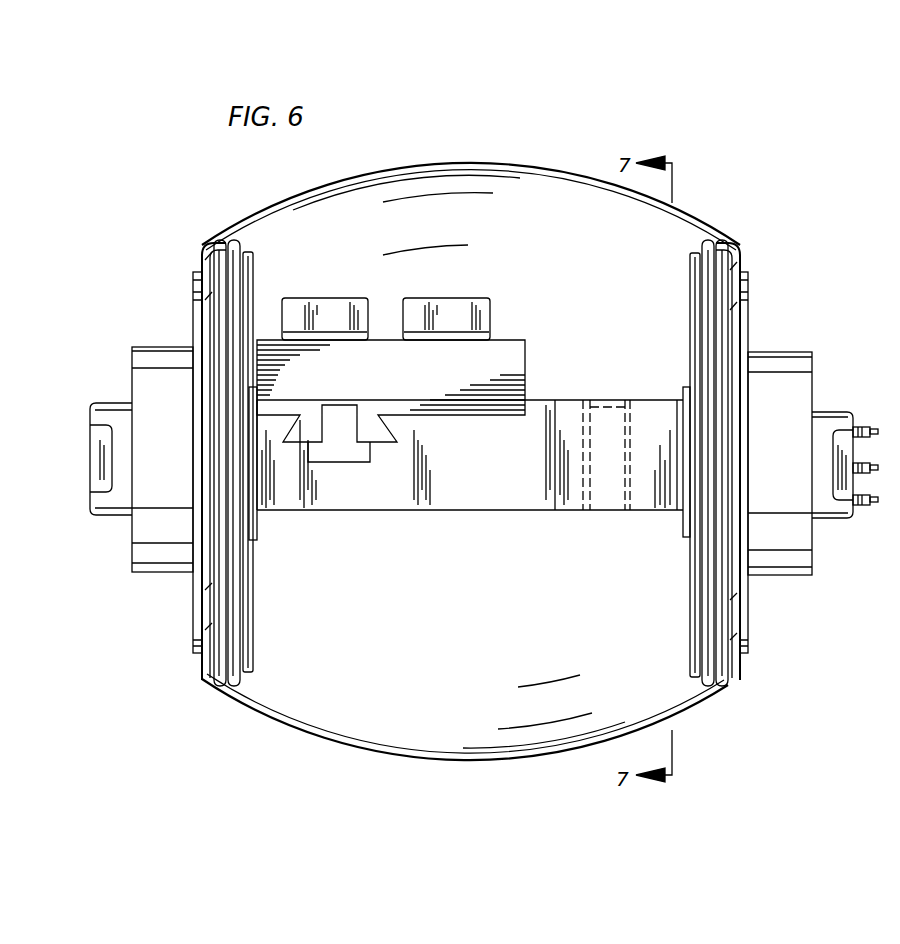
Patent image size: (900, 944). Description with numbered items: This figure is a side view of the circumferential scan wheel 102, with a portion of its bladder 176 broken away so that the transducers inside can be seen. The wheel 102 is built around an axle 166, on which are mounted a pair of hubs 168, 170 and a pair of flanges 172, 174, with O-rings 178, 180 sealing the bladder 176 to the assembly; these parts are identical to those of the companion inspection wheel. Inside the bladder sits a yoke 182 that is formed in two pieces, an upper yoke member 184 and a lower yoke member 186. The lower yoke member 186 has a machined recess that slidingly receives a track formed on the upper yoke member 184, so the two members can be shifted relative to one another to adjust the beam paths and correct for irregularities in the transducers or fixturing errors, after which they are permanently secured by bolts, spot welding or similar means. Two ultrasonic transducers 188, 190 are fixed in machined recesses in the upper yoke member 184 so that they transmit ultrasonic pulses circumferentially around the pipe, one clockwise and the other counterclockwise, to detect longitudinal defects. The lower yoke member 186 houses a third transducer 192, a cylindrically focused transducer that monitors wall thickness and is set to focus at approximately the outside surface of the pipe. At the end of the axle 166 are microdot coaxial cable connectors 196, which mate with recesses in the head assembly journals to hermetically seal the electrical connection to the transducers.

The wheel 102 is at (697, 218).
The axle 166 is at (113, 520).
The hub 168 is at (787, 578).
The hub 170 is at (160, 575).
The flange 172 is at (722, 685).
The flange 174 is at (205, 672).
The bladder 176 is at (532, 762).
The O-ring 178 is at (712, 240).
The O-ring 180 is at (228, 243).
The yoke 182 is at (393, 515).
The upper yoke member 184 is at (515, 368).
The lower yoke member 186 is at (527, 512).
The ultrasonic transducer 188 is at (343, 303).
The ultrasonic transducer 190 is at (462, 315).
The third transducer 192 is at (605, 500).
The microdot coaxial cable connector 196 is at (870, 408).